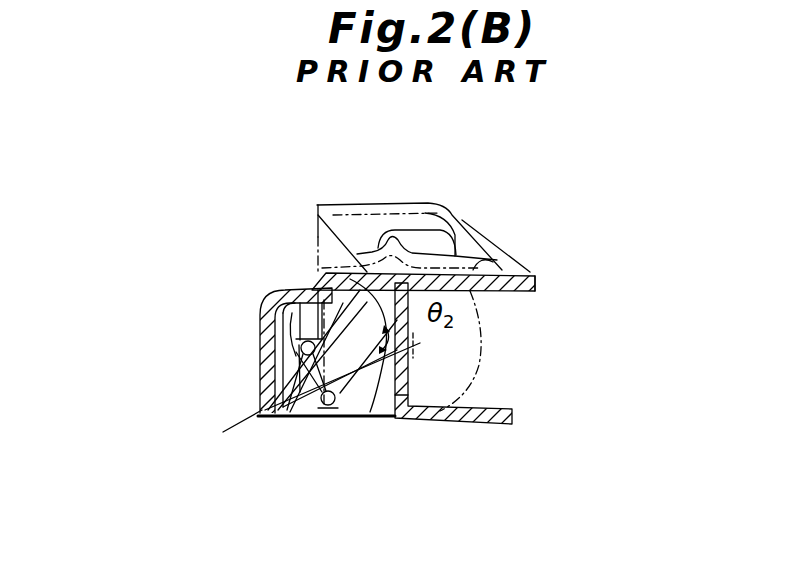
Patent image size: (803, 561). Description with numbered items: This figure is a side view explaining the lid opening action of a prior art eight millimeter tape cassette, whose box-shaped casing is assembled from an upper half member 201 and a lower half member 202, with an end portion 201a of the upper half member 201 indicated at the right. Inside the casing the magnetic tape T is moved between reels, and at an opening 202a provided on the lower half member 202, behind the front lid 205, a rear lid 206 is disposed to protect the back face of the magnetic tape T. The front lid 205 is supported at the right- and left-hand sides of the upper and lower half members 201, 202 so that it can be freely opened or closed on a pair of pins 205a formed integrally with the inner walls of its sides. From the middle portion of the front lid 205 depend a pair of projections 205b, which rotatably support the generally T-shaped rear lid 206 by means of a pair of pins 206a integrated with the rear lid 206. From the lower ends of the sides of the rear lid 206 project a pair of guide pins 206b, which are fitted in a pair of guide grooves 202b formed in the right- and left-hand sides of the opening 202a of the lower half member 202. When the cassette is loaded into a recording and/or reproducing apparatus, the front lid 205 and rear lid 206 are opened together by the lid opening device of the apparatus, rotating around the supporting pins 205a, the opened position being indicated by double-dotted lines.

The upper half member 201 is at (531, 256).
The end portion of upper plate 201a is at (535, 275).
The lower half member 202 is at (515, 434).
The opening 202a is at (350, 410).
The guide grooves 202b is at (380, 400).
The front lid 205 is at (383, 203).
The pins 205a is at (420, 343).
The projections 205b is at (267, 303).
The rear lid 206 is at (300, 413).
The pins 206a is at (293, 290).
The guide pins 206b is at (323, 410).
The magnetic tape T is at (260, 327).